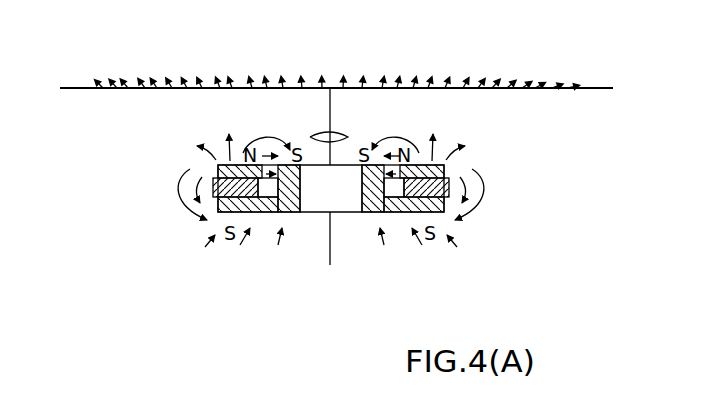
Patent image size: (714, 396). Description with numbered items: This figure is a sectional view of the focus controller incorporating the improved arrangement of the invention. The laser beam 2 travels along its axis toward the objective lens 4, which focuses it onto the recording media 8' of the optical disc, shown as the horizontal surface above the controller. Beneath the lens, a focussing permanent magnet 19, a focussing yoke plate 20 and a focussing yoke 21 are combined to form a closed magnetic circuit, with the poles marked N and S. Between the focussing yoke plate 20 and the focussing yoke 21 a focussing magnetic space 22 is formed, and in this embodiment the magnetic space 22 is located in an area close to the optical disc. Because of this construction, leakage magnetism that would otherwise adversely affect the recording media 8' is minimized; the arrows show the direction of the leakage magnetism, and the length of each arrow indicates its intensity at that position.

The disc recording media 8' is at (336, 56).
The laser beam 2 is at (333, 222).
The objective lens 4 is at (348, 131).
The focussing yoke plate 20 is at (219, 166).
The focussing permanent magnet 19 is at (215, 188).
The focussing yoke 21 is at (270, 213).
The focussing magnetic space 22 is at (394, 167).